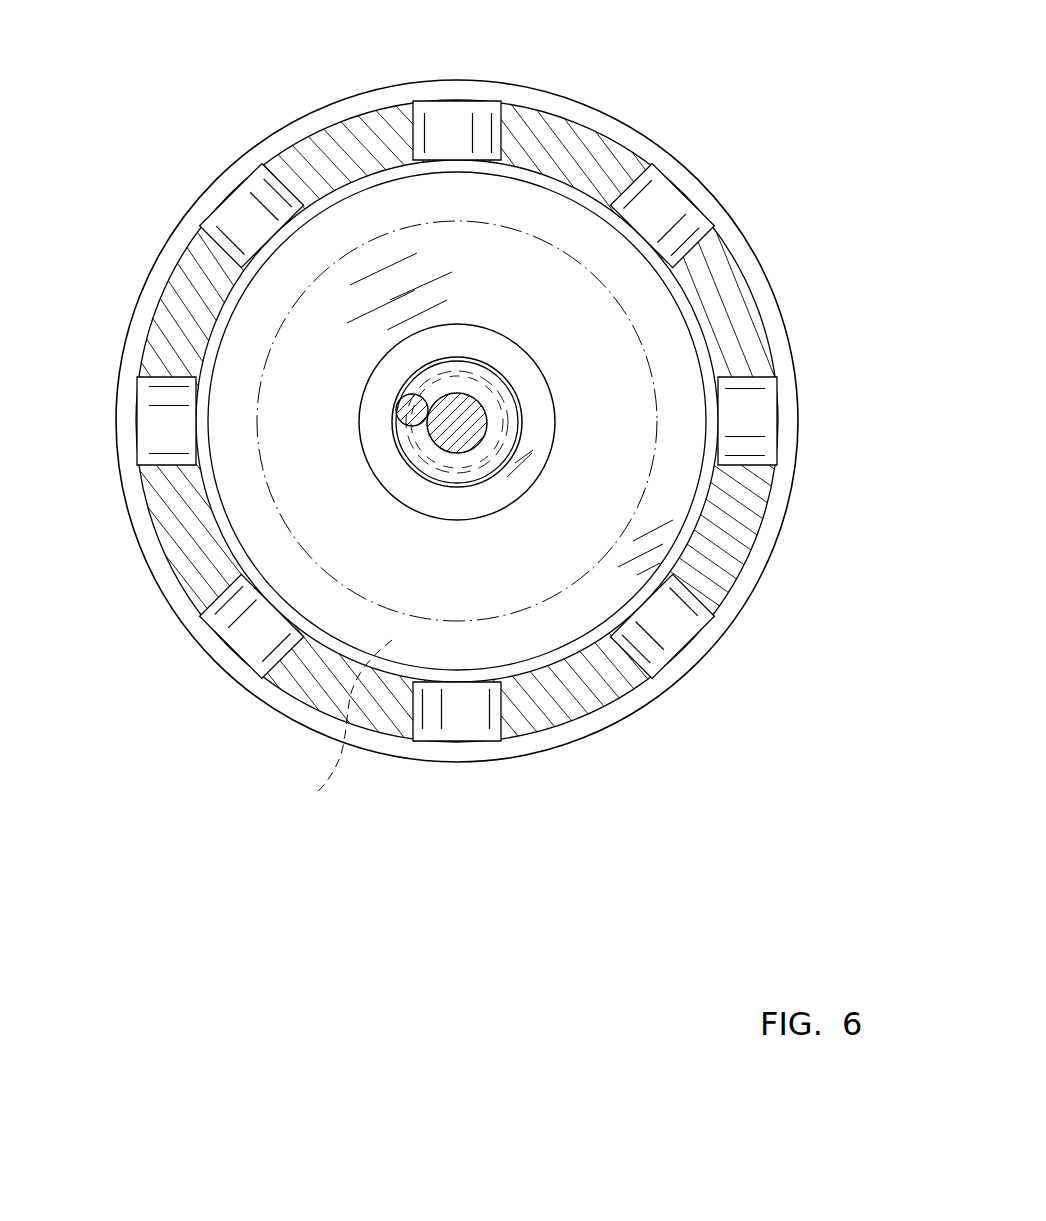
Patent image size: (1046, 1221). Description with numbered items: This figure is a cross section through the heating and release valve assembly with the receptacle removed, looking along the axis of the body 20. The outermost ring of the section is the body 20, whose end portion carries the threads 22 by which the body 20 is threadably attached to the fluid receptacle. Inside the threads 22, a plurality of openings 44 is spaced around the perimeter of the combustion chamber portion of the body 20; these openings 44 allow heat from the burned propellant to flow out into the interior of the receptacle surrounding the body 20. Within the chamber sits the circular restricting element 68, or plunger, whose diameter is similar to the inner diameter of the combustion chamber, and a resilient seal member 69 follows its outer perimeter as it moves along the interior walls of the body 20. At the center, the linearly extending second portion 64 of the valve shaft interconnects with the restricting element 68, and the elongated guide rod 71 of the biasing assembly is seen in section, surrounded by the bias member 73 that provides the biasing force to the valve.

The body 20 is at (472, 453).
The threads 22 is at (310, 125).
The openings 44 is at (237, 217).
The second portion 64 is at (545, 373).
The restricting element 68 is at (297, 497).
The seal member 69 is at (318, 792).
The guide rod 71 is at (455, 398).
The bias member 73 is at (505, 416).